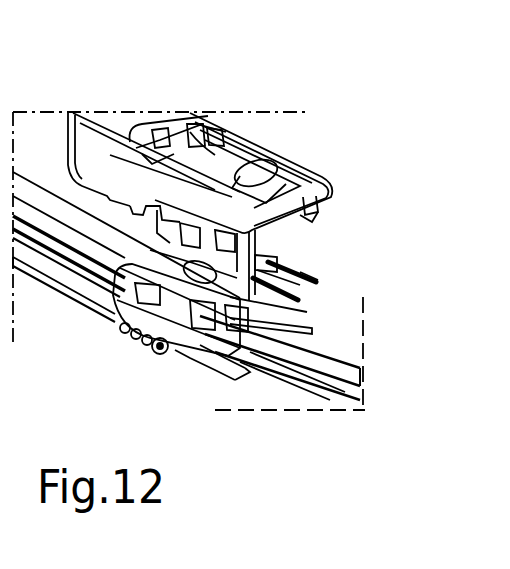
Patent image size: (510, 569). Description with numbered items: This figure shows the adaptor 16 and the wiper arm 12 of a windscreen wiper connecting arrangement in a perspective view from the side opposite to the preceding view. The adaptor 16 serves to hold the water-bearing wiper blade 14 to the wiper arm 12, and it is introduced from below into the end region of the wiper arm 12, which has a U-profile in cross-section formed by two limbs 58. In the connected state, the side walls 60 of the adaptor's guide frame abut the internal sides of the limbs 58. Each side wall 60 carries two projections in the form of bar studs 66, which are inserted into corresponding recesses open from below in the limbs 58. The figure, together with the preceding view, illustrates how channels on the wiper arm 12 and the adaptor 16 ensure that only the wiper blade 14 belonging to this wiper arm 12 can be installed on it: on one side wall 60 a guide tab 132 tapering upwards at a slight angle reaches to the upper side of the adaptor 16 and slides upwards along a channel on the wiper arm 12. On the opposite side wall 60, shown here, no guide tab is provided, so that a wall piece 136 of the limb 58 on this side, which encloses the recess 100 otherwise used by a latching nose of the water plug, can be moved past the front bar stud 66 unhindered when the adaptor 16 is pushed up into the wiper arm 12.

The wiper arm 12 is at (85, 82).
The wiper blade 14 is at (263, 416).
The adaptor 16 is at (296, 248).
The limb 58 is at (173, 208).
The side wall 60 is at (133, 290).
The bar stud 66 is at (207, 360).
The recess 100 is at (165, 352).
The guide tab 132 is at (322, 280).
The wall piece 136 is at (300, 328).